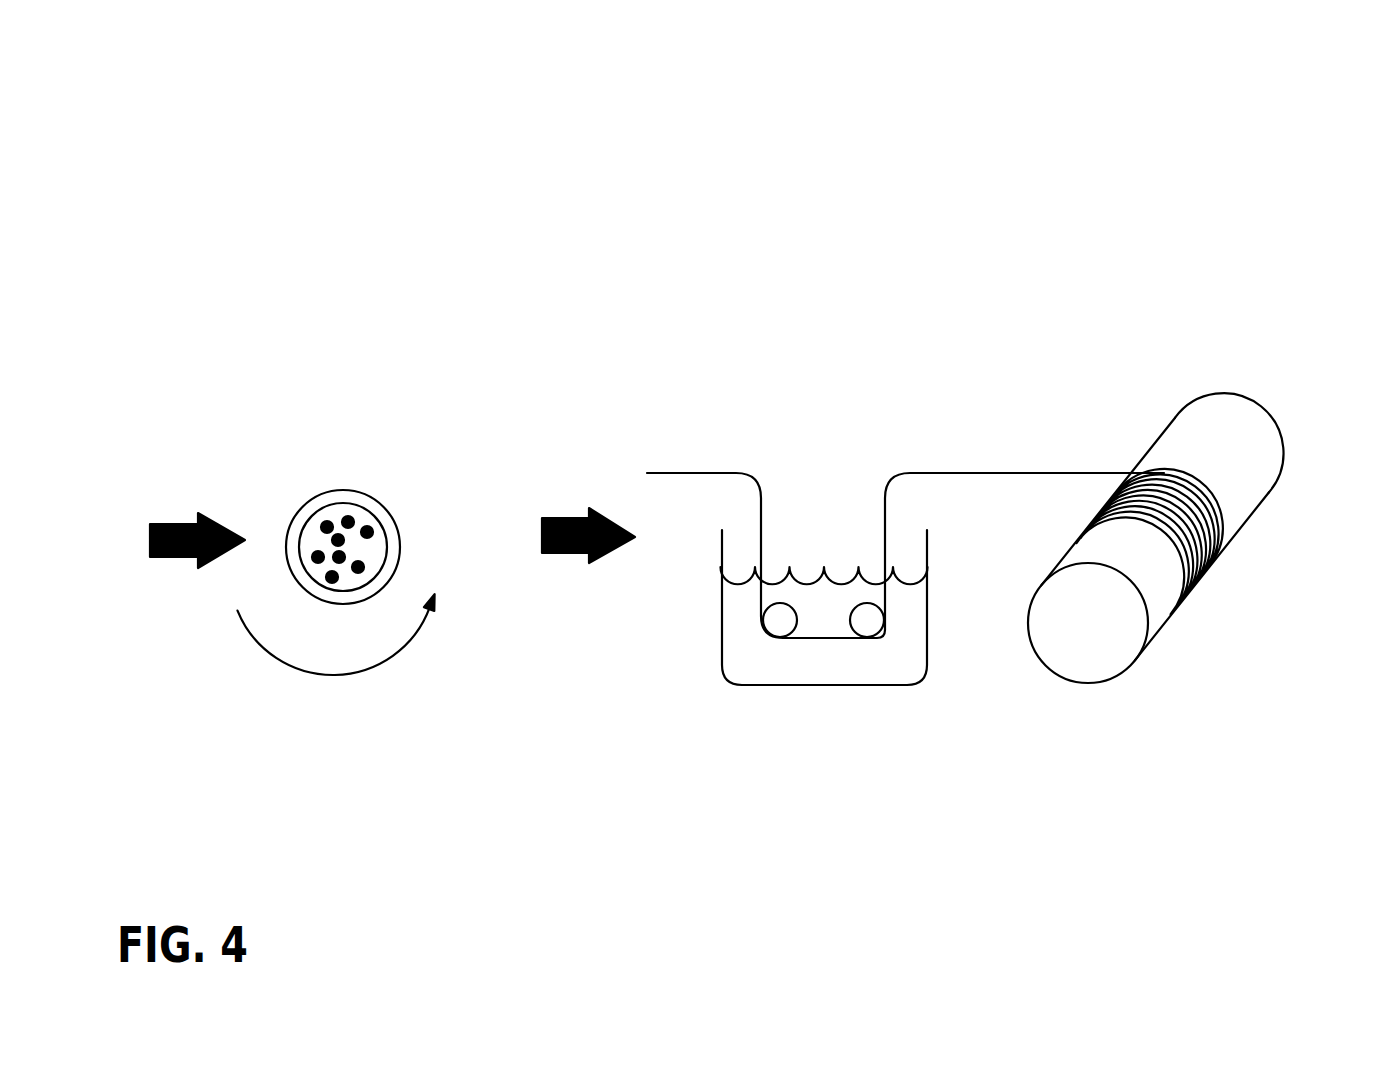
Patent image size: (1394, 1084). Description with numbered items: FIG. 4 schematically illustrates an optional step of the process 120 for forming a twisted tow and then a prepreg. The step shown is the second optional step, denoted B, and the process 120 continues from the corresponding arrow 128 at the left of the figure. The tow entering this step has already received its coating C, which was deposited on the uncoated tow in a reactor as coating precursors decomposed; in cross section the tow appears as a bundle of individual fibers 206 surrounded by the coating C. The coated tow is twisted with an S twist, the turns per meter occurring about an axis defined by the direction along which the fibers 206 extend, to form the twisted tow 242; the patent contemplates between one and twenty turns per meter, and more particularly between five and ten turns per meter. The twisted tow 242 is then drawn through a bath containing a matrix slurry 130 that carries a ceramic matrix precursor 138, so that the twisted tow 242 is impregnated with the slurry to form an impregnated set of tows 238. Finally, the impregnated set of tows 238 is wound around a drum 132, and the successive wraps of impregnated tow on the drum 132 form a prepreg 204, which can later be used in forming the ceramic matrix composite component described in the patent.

The process 120 is at (163, 69).
The arrow 128 is at (193, 560).
The second optional step B is at (190, 473).
The twisted tow 242 is at (367, 477).
The coating C is at (337, 503).
The fibers 206 is at (368, 532).
The S twist S is at (360, 673).
The matrix slurry 130 is at (824, 555).
The ceramic matrix precursor 138 is at (778, 662).
The impregnated set of tows 238 is at (1017, 470).
The drum 132 is at (1210, 448).
The prepreg 204 is at (1188, 532).